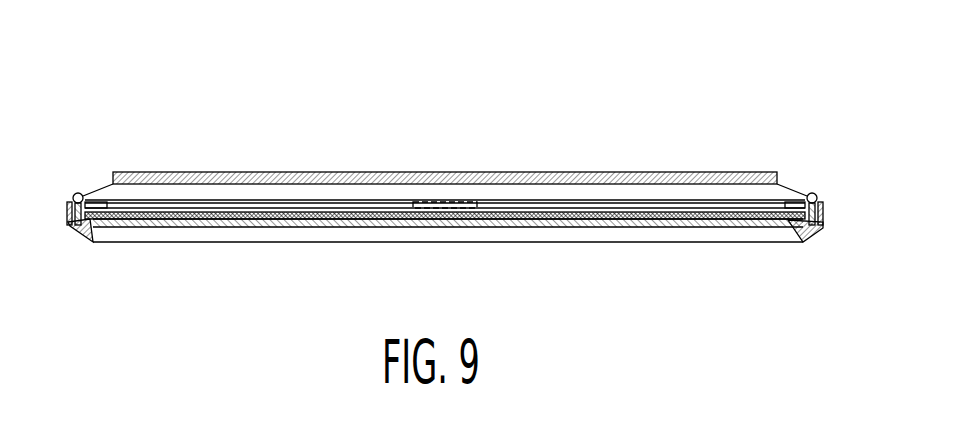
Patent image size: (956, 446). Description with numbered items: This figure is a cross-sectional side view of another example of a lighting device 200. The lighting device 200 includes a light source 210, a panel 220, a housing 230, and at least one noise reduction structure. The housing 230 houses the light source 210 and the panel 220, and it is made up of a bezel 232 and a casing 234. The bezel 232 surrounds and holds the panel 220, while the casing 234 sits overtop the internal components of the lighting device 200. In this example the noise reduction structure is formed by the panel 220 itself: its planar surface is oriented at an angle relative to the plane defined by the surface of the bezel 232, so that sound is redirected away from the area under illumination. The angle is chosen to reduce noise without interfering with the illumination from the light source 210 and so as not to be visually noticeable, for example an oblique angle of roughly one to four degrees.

The lighting device 200 is at (131, 98).
The light source 210 is at (351, 207).
The panel 220 is at (366, 223).
The housing 230 is at (675, 171).
The bezel 232 is at (800, 244).
The casing 234 is at (442, 172).